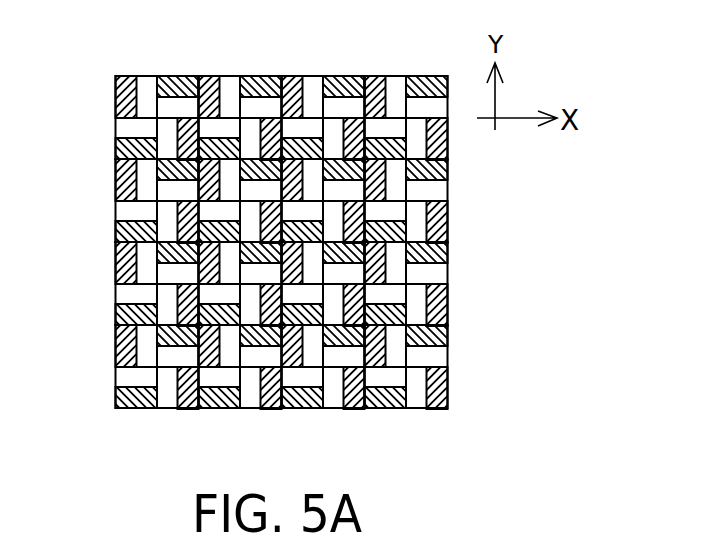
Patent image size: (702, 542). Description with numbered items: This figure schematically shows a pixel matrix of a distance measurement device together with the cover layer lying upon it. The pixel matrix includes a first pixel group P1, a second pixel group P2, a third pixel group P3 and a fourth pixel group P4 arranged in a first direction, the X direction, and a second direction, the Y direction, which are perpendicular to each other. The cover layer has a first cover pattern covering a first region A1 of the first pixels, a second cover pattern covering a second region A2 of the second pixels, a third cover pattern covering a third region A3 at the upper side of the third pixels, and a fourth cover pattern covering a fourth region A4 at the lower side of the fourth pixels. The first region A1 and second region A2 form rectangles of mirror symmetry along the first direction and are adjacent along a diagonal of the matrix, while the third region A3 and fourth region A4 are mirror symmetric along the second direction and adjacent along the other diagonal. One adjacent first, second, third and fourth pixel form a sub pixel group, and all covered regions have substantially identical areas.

The first region A1 is at (114, 88).
The second region A2 is at (443, 393).
The third region A3 is at (191, 86).
The fourth region A4 is at (113, 158).
The first pixel group P1 is at (157, 78).
The second pixel group P2 is at (447, 410).
The third pixel group P3 is at (197, 78).
The fourth pixel group P4 is at (115, 118).